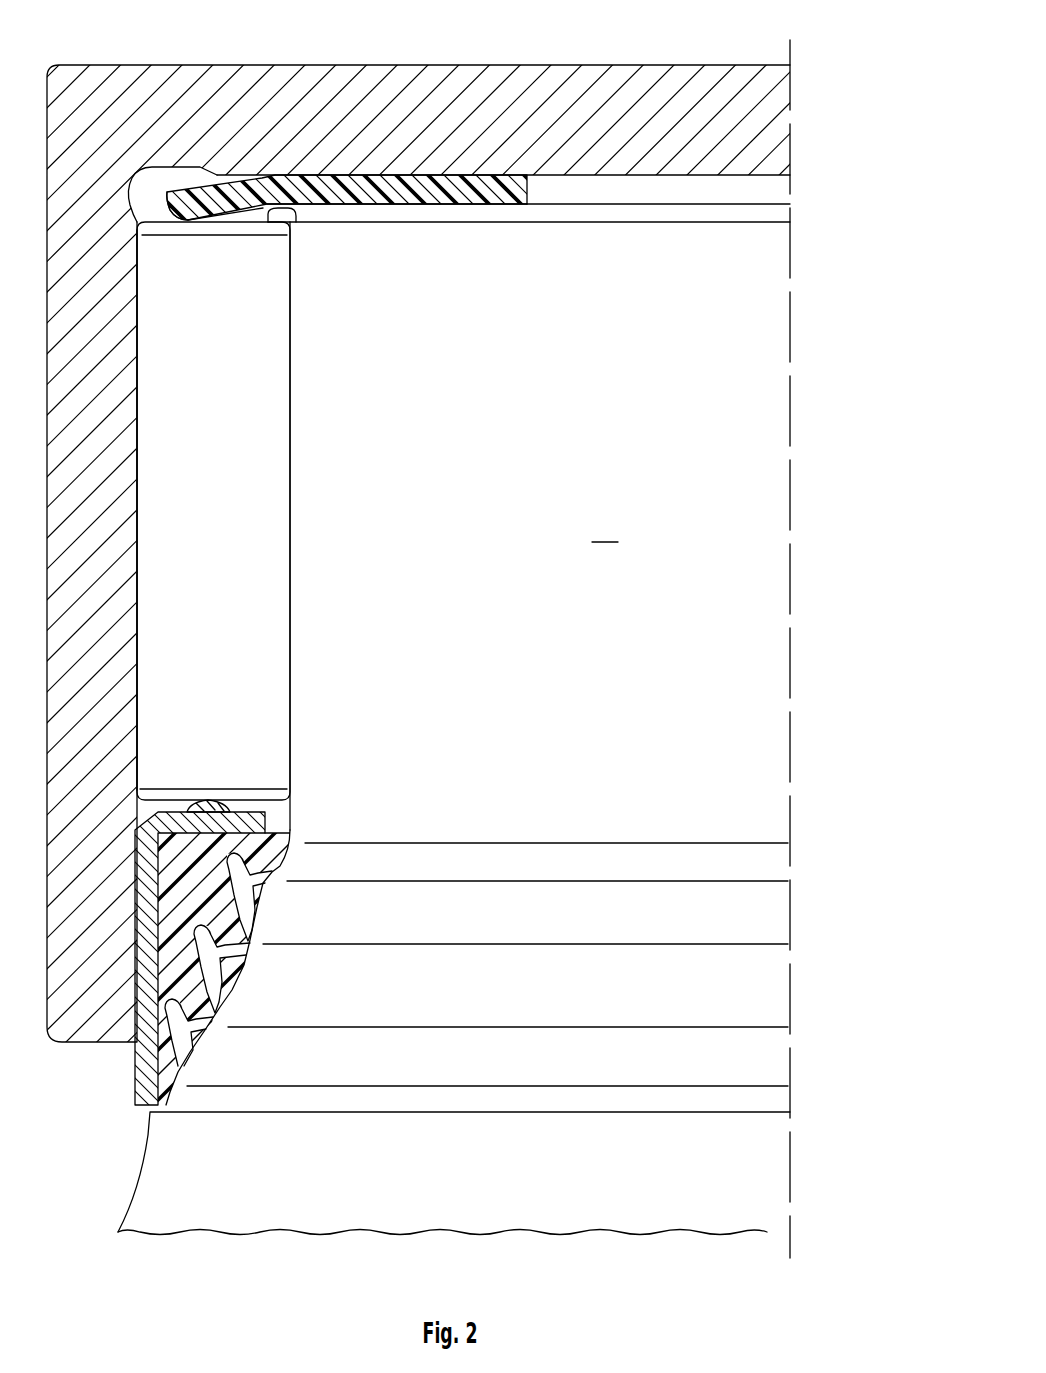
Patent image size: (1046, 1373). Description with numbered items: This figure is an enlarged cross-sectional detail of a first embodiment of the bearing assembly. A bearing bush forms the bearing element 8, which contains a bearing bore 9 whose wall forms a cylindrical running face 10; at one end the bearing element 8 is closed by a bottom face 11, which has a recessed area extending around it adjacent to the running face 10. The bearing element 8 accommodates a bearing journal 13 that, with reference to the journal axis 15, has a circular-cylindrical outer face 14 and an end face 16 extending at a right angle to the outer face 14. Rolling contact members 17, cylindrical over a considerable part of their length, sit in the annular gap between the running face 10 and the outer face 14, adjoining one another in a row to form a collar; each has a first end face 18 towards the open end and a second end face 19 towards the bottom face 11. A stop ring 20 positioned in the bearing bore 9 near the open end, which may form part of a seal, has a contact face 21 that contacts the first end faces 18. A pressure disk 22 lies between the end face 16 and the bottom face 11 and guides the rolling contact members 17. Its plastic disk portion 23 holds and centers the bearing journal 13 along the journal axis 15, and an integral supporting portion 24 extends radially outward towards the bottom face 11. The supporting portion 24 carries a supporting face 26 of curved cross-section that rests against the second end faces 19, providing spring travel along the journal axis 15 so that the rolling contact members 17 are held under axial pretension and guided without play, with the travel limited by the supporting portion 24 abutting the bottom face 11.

The bearing element 8 is at (535, 60).
The bearing bore 9 is at (148, 185).
The running face 10 is at (137, 522).
The bottom face 11 is at (579, 180).
The bearing journal 13 is at (605, 528).
The outer face 14 is at (262, 388).
The journal axis 15 is at (792, 345).
The end face 16 is at (700, 186).
The rolling contact members 17 is at (248, 638).
The first end face 18 is at (281, 812).
The second end face 19 is at (292, 212).
The stop ring 20 is at (245, 823).
The contact face 21 is at (215, 800).
The pressure disk 22 is at (474, 214).
The disk portion 23 is at (423, 192).
The supporting portion 24 is at (232, 213).
The supporting face 26 is at (210, 222).